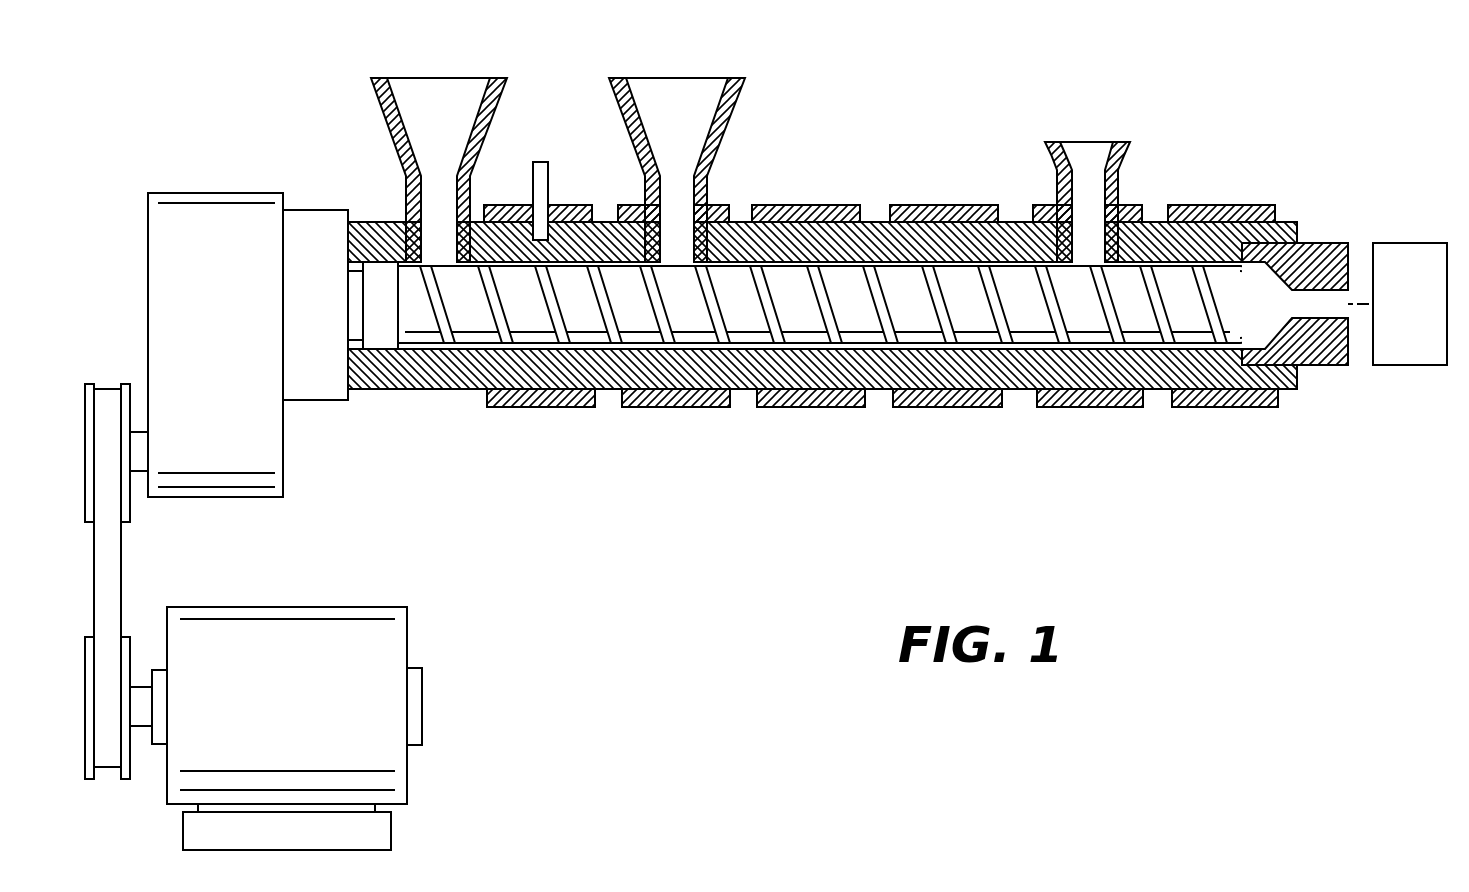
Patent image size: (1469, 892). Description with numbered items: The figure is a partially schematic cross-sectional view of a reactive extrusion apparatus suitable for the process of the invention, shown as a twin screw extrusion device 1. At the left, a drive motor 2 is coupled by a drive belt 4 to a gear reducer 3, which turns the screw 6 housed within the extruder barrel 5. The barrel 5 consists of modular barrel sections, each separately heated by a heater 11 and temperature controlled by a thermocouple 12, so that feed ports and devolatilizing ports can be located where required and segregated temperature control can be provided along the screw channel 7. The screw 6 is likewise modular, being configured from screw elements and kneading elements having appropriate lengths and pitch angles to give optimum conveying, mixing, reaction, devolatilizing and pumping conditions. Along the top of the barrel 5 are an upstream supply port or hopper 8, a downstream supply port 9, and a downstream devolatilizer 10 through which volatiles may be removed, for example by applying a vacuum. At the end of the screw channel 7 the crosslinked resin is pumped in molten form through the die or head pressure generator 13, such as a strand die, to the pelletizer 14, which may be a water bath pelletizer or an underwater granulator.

The twin screw extrusion device 1 is at (848, 252).
The drive motor 2 is at (311, 635).
The gear reducer 3 is at (222, 217).
The drive belt 4 is at (122, 582).
The extruder barrel 5 is at (433, 377).
The screw 6 is at (970, 313).
The screw channel 7 is at (1080, 343).
The upstream supply port or hopper 8 is at (452, 88).
The downstream supply port 9 is at (696, 88).
The downstream devolatilizer 10 is at (1099, 124).
The heater 11 is at (1222, 205).
The thermocouple 12 is at (542, 162).
The die or head pressure generator 13 is at (1325, 365).
The pelletizer 14 is at (1415, 365).